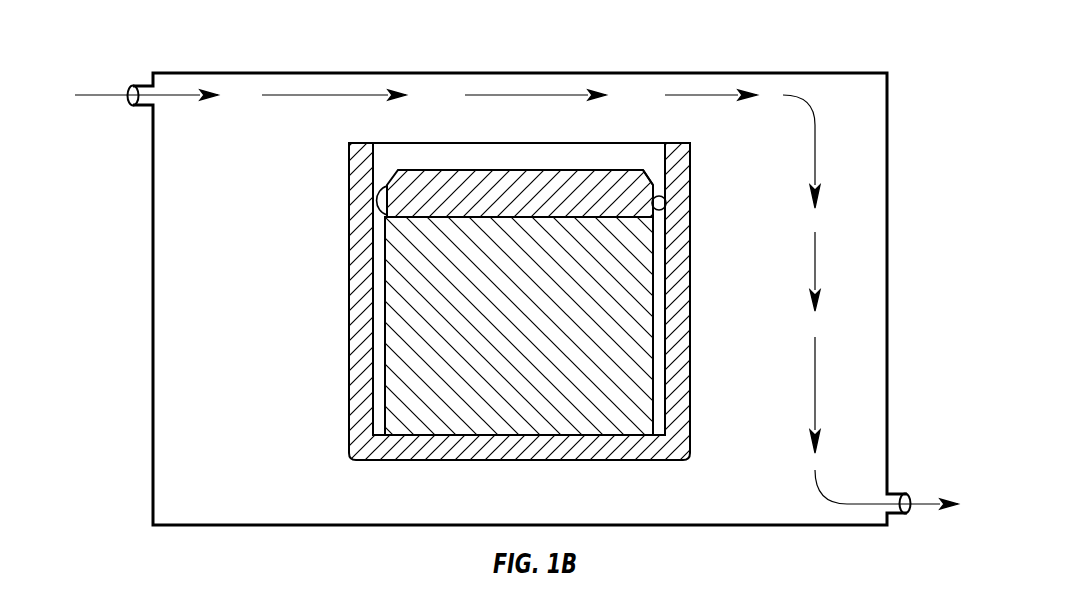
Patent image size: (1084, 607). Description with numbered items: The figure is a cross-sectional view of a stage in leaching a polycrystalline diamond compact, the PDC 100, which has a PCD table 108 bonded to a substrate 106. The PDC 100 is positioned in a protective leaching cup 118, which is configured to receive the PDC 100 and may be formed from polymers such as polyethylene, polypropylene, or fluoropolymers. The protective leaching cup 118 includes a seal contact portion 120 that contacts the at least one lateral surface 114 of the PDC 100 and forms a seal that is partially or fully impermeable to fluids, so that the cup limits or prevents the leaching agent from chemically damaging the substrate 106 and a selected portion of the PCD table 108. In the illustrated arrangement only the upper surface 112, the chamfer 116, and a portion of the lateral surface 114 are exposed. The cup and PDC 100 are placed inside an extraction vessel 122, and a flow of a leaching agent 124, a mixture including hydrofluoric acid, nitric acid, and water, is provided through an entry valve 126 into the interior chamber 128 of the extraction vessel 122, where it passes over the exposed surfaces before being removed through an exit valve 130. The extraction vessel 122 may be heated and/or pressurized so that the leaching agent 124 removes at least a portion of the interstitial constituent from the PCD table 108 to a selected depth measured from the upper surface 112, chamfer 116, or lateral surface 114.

The PDC 100 is at (604, 152).
The substrate 106 is at (605, 383).
The PCD table 108 is at (666, 197).
The upper surface 112 is at (423, 169).
The lateral surface 114 is at (383, 192).
The chamfer 116 is at (650, 170).
The protective leaching cup 118 is at (690, 321).
The seal contact portion 120 is at (664, 208).
The extraction vessel 122 is at (886, 291).
The leaching agent 124 is at (327, 94).
The entry valve 126 is at (139, 86).
The interior chamber 128 is at (847, 413).
The exit valve 130 is at (891, 514).